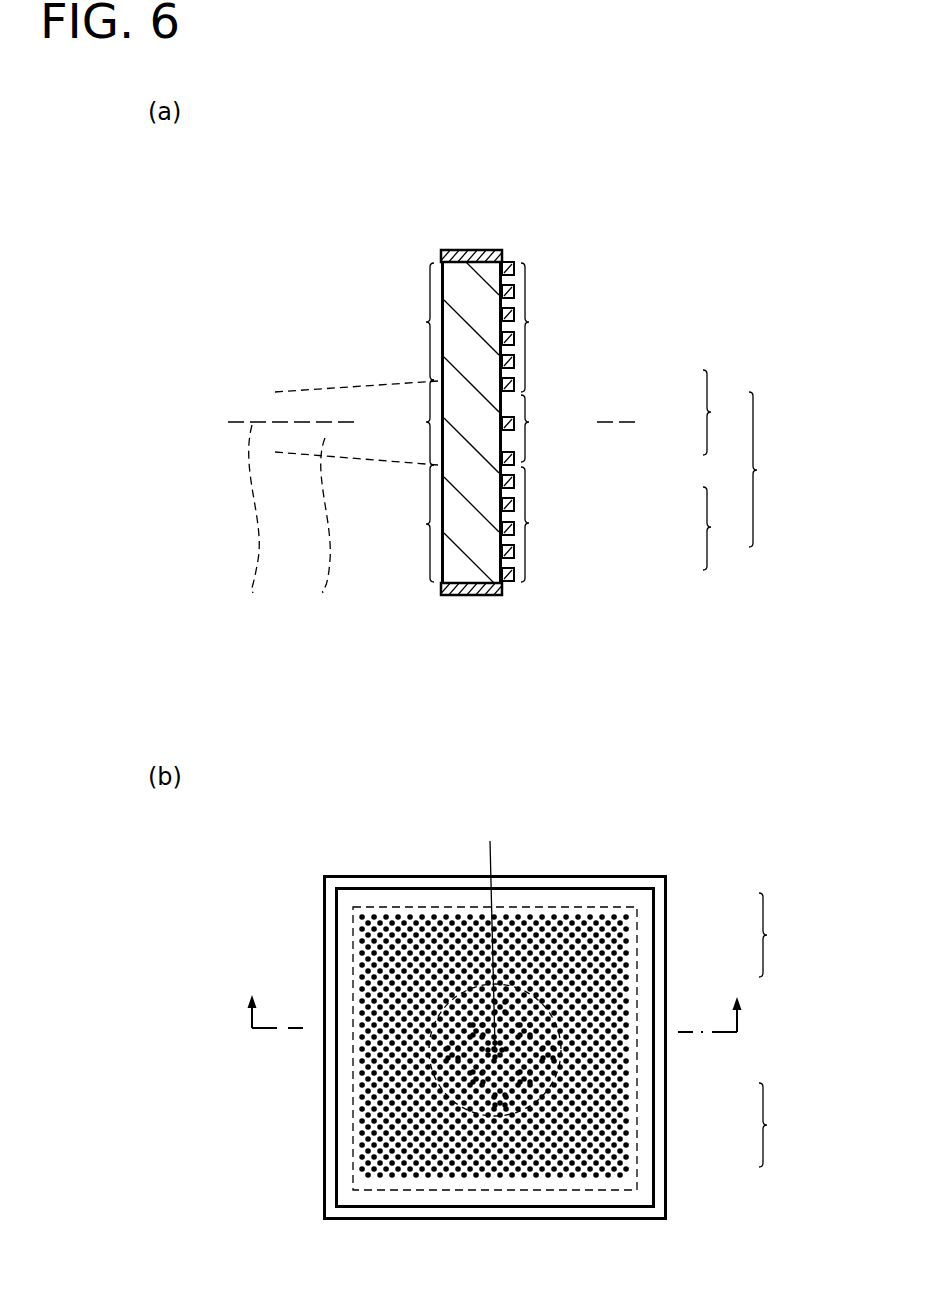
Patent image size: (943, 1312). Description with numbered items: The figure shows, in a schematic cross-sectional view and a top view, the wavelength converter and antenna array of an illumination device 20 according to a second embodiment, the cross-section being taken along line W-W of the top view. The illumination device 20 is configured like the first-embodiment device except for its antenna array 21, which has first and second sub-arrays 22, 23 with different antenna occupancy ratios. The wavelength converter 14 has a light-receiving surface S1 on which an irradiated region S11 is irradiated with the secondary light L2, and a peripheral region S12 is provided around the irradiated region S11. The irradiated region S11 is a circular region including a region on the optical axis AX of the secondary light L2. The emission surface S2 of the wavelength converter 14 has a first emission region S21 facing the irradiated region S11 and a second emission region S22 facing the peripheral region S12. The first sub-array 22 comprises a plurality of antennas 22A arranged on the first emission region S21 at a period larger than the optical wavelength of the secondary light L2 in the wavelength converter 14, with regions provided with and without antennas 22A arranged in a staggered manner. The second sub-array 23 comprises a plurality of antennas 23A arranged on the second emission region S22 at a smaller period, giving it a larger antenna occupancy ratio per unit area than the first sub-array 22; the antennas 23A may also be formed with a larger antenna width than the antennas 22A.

The wavelength converter 14 is at (476, 250).
The illumination device 20 is at (308, 194).
The antenna array 21 is at (772, 469).
The first sub-array 22 is at (754, 768).
The antenna 22A is at (515, 390).
The second sub-array 23 is at (755, 732).
The antenna 23A is at (515, 505).
The light-receiving surface S1 is at (441, 287).
The emission surface S2 is at (512, 279).
The irradiated region S11 is at (356, 422).
The peripheral region S12 is at (404, 422).
The first emission region S21 is at (275, 1126).
The second emission region S22 is at (275, 1079).
The optical axis AX is at (434, 734).
The secondary light L2 is at (325, 532).
The line W- W is at (496, 1013).